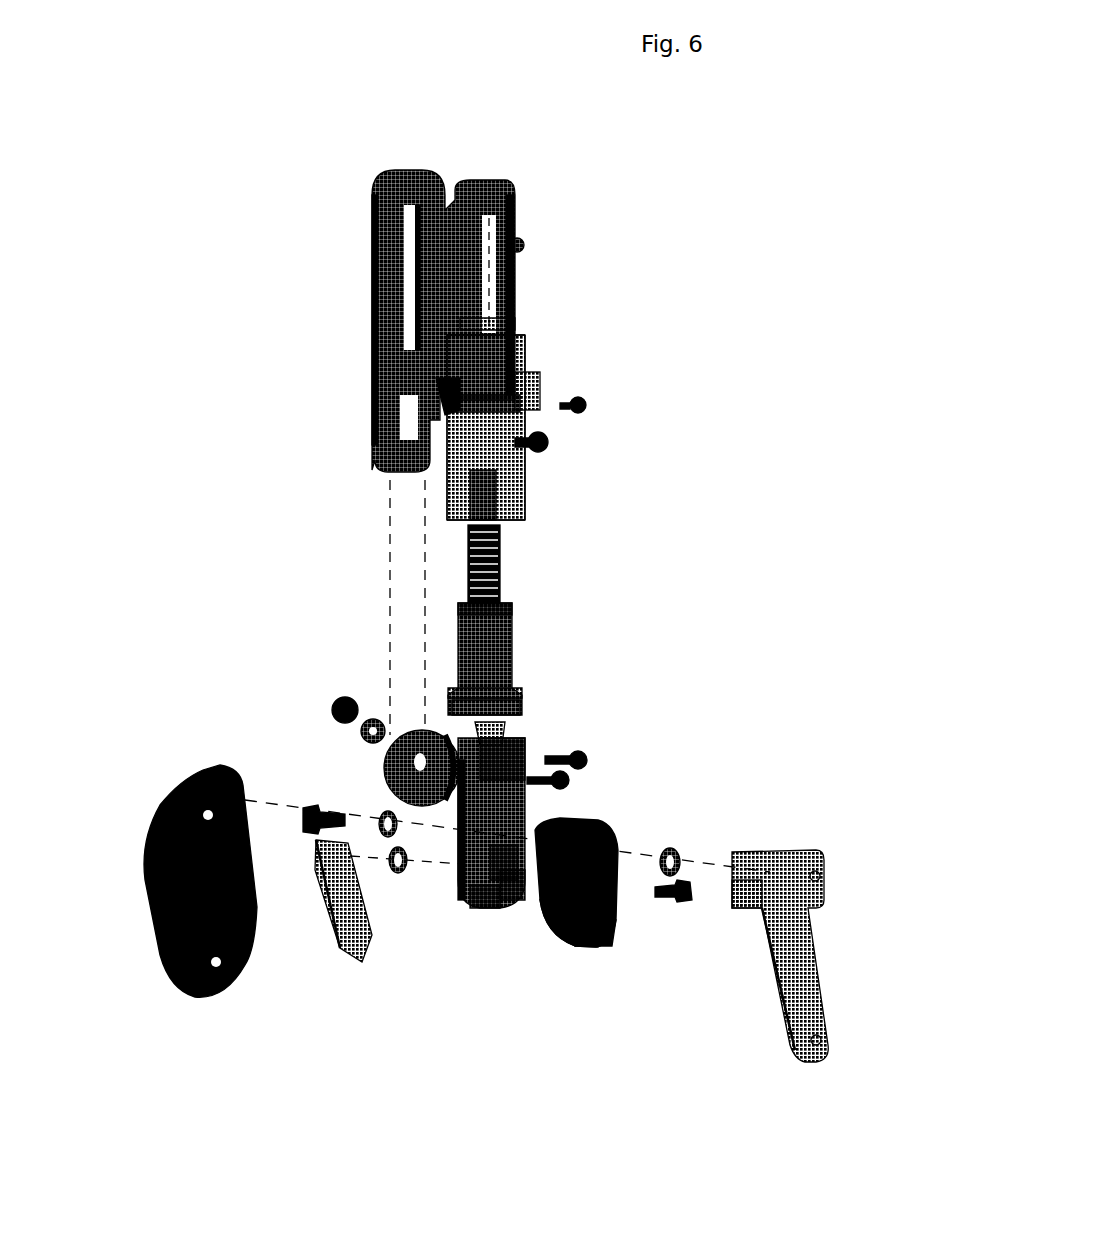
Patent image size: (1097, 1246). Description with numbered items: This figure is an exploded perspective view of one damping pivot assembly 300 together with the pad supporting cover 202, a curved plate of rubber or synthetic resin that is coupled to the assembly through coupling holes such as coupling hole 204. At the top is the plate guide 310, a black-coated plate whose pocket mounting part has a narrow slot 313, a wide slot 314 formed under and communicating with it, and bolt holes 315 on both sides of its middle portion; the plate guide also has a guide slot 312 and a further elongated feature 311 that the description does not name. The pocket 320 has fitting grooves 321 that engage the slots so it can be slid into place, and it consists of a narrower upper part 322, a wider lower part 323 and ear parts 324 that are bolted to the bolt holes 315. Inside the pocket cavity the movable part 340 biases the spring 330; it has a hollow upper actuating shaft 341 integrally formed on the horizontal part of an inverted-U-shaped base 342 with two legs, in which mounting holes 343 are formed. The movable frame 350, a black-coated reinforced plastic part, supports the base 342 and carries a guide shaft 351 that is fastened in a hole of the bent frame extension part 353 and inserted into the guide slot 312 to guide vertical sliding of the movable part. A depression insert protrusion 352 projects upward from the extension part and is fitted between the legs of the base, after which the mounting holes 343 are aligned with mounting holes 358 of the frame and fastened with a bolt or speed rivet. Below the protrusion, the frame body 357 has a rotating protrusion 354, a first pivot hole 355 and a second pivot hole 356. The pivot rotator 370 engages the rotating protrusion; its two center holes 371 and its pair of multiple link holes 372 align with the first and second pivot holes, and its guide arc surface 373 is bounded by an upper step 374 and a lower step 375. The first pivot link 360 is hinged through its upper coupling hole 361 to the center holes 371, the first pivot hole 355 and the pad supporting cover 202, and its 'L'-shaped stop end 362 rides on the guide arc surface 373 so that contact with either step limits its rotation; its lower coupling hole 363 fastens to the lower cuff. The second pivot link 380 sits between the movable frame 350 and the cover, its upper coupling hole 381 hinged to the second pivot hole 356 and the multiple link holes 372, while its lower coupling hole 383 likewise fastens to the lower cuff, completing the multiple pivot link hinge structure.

The damping pivot assembly 300 is at (598, 222).
The plate guide 310 is at (440, 183).
The slot 311 is at (410, 255).
The guide slot 312 is at (408, 440).
The narrow slot 313 is at (520, 240).
The wide slot 314 is at (520, 318).
The bolt holes 315 is at (525, 242).
The pocket 320 is at (543, 492).
The fitting grooves 321 is at (455, 480).
The upper part 322 is at (520, 362).
The lower part 323 is at (540, 468).
The ear parts 324 is at (545, 385).
The spring 330 is at (500, 565).
The movable part 340 is at (525, 630).
The upper actuating shaft 341 is at (512, 612).
The base 342 is at (518, 690).
The mounting holes 343 is at (518, 703).
The movable frame 350 is at (458, 908).
The guide shaft 351 is at (388, 785).
The depression insert protrusion 352 is at (505, 742).
The frame extension part 353 is at (430, 765).
The rotating protrusion 354 is at (482, 905).
The first pivot hole 355 is at (502, 860).
The second pivot hole 356 is at (515, 898).
The frame body 357 is at (527, 815).
The mounting holes 358 is at (588, 766).
The first pivot link 360 is at (800, 927).
The upper coupling hole 361 is at (816, 878).
The 'L'-shaped stop end 362 is at (734, 900).
The lower coupling hole 363 is at (835, 1058).
The pivot rotator 370 is at (610, 822).
The center holes 371 is at (672, 850).
The multiple link holes 372 is at (627, 886).
The guide arc surface 373 is at (578, 944).
The upper step 374 is at (607, 937).
The lower step 375 is at (590, 946).
The second pivot link 380 is at (348, 947).
The upper coupling hole 381 is at (345, 818).
The lower coupling hole 383 is at (368, 962).
The pad supporting cover 202 is at (205, 770).
The coupling hole 204 is at (222, 990).